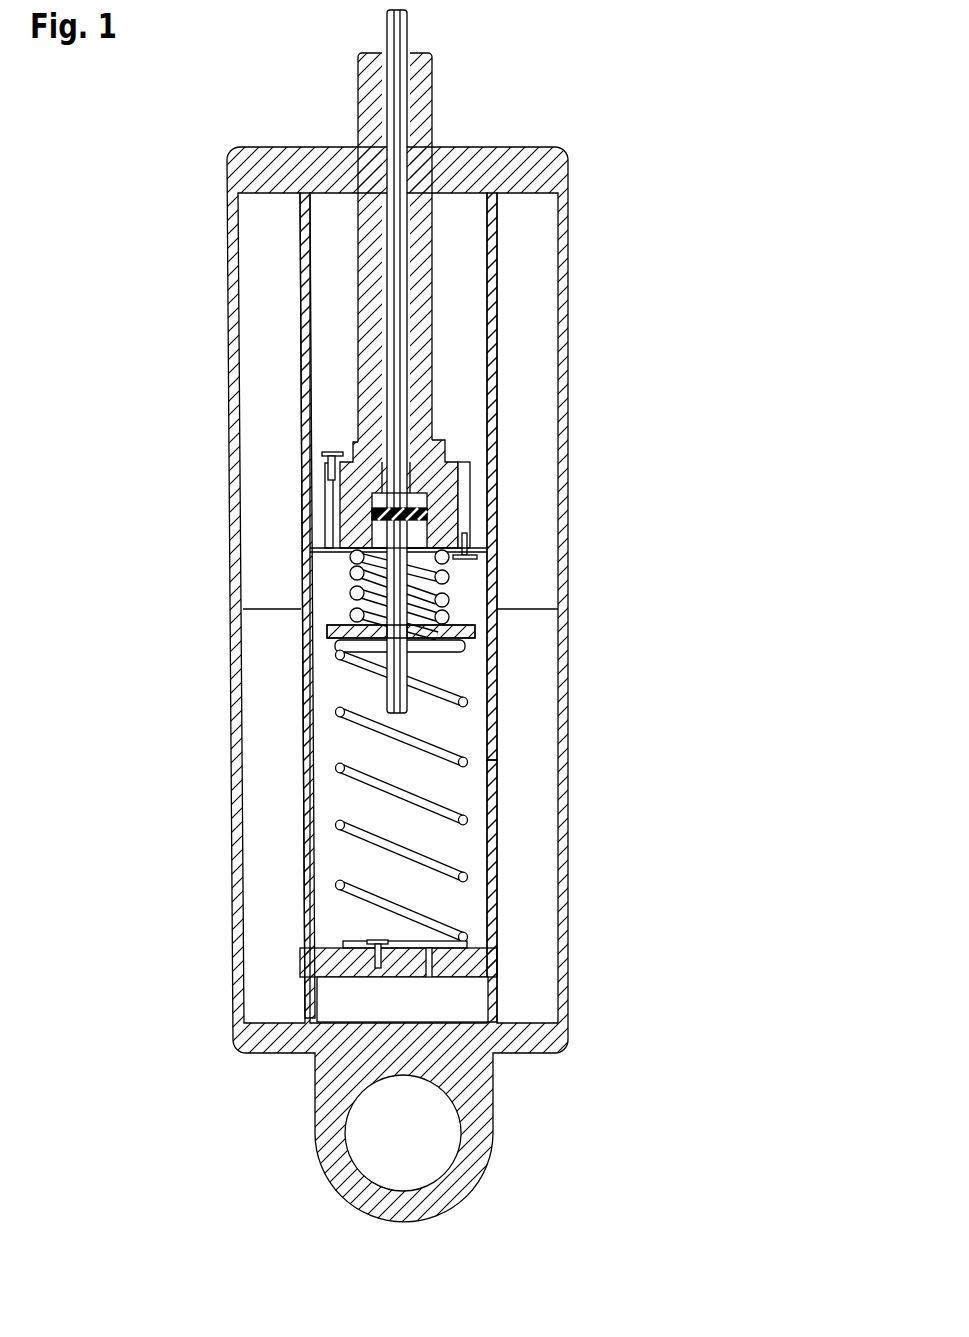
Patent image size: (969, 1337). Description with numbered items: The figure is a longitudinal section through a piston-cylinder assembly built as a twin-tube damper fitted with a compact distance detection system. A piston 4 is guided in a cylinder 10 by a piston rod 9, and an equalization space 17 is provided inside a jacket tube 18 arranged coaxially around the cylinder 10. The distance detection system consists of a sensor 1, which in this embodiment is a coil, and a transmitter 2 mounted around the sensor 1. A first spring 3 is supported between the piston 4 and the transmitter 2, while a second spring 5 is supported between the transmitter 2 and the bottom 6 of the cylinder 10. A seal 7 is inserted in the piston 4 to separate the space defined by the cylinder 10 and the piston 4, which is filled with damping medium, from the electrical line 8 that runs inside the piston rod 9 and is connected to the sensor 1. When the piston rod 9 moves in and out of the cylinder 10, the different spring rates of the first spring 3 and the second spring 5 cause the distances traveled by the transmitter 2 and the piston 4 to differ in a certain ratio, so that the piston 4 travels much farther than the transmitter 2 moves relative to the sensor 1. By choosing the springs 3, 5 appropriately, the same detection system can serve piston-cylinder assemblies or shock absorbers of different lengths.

The sensor 1 is at (480, 600).
The transmitter 2 is at (470, 630).
The first spring 3 is at (350, 570).
The piston 4 is at (320, 503).
The second spring 5 is at (460, 700).
The bottom 6 is at (487, 915).
The seal 7 is at (430, 510).
The electrical line 8 is at (400, 350).
The piston rod 9 is at (430, 262).
The cylinder 10 is at (495, 757).
The equalization space 17 is at (527, 968).
The jacket tube 18 is at (570, 825).